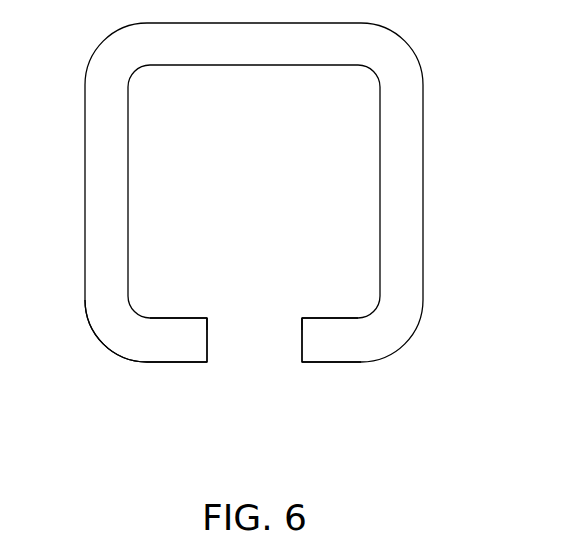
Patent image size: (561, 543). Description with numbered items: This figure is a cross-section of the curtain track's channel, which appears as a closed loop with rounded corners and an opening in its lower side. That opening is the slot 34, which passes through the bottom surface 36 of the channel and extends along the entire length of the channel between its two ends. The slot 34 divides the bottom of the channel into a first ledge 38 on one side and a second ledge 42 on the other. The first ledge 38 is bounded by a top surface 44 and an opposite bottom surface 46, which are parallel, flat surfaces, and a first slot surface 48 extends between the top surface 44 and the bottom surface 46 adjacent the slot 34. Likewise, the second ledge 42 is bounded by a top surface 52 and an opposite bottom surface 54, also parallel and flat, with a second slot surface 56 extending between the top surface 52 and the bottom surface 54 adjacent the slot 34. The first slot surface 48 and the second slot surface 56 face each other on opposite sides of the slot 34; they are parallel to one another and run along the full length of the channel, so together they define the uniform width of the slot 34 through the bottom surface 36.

The slot 34 is at (243, 377).
The bottom surface 36 is at (142, 362).
The first ledge 38 is at (210, 316).
The second ledge 42 is at (300, 316).
The top surface 44 is at (167, 318).
The bottom surface 46 is at (197, 363).
The first slot surface 48 is at (207, 335).
The top surface 52 is at (340, 318).
The bottom surface 54 is at (343, 362).
The second slot surface 56 is at (302, 345).